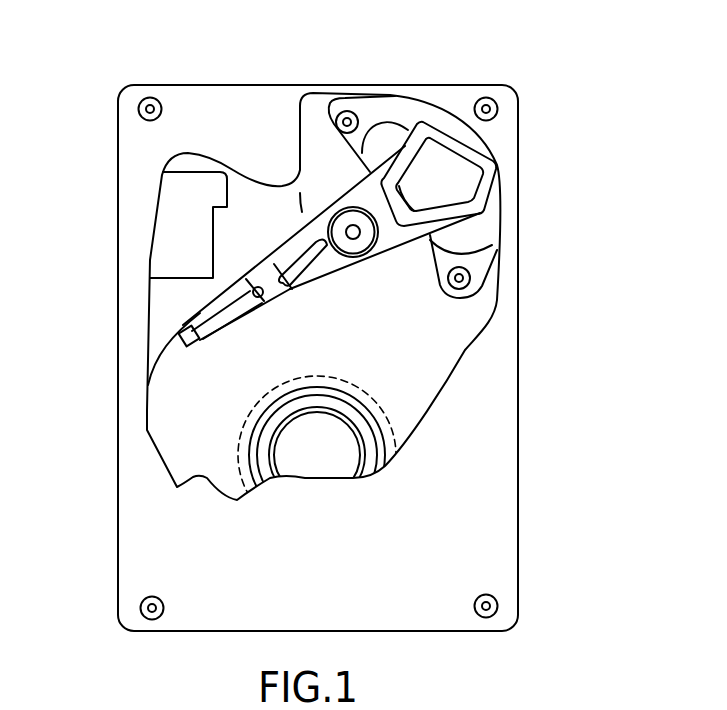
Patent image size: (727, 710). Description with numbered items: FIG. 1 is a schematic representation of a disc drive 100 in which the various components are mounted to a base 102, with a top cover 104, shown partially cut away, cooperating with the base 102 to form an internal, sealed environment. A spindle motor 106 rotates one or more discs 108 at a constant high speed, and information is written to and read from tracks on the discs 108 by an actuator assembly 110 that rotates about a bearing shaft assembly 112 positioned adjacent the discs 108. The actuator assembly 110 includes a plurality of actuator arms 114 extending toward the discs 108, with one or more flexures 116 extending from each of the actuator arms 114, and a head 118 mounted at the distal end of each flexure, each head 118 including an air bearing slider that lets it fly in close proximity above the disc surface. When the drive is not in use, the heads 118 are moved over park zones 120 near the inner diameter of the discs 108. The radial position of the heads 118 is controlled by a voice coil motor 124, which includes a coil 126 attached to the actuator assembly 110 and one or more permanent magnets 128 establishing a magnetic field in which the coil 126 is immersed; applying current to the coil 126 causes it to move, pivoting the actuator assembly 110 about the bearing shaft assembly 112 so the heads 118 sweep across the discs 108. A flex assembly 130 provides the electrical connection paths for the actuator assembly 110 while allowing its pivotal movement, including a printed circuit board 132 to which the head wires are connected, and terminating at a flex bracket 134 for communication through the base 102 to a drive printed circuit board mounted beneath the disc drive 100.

The disc drive 100 is at (149, 57).
The base 102 is at (164, 313).
The top cover 104 is at (153, 523).
The spindle motor 106 is at (317, 456).
The discs 108 is at (431, 395).
The actuator assembly 110 is at (344, 258).
The bearing shaft assembly 112 is at (360, 235).
The actuator arms 114 is at (322, 278).
The flexures 116 is at (224, 318).
The head 118 is at (184, 347).
The park zones 120 is at (237, 455).
The voice coil motor 124 is at (393, 128).
The coil 126 is at (482, 171).
The permanent magnets 128 is at (376, 143).
The flex assembly 130 is at (293, 240).
The printed circuit board 132 is at (323, 205).
The flex bracket 134 is at (178, 232).